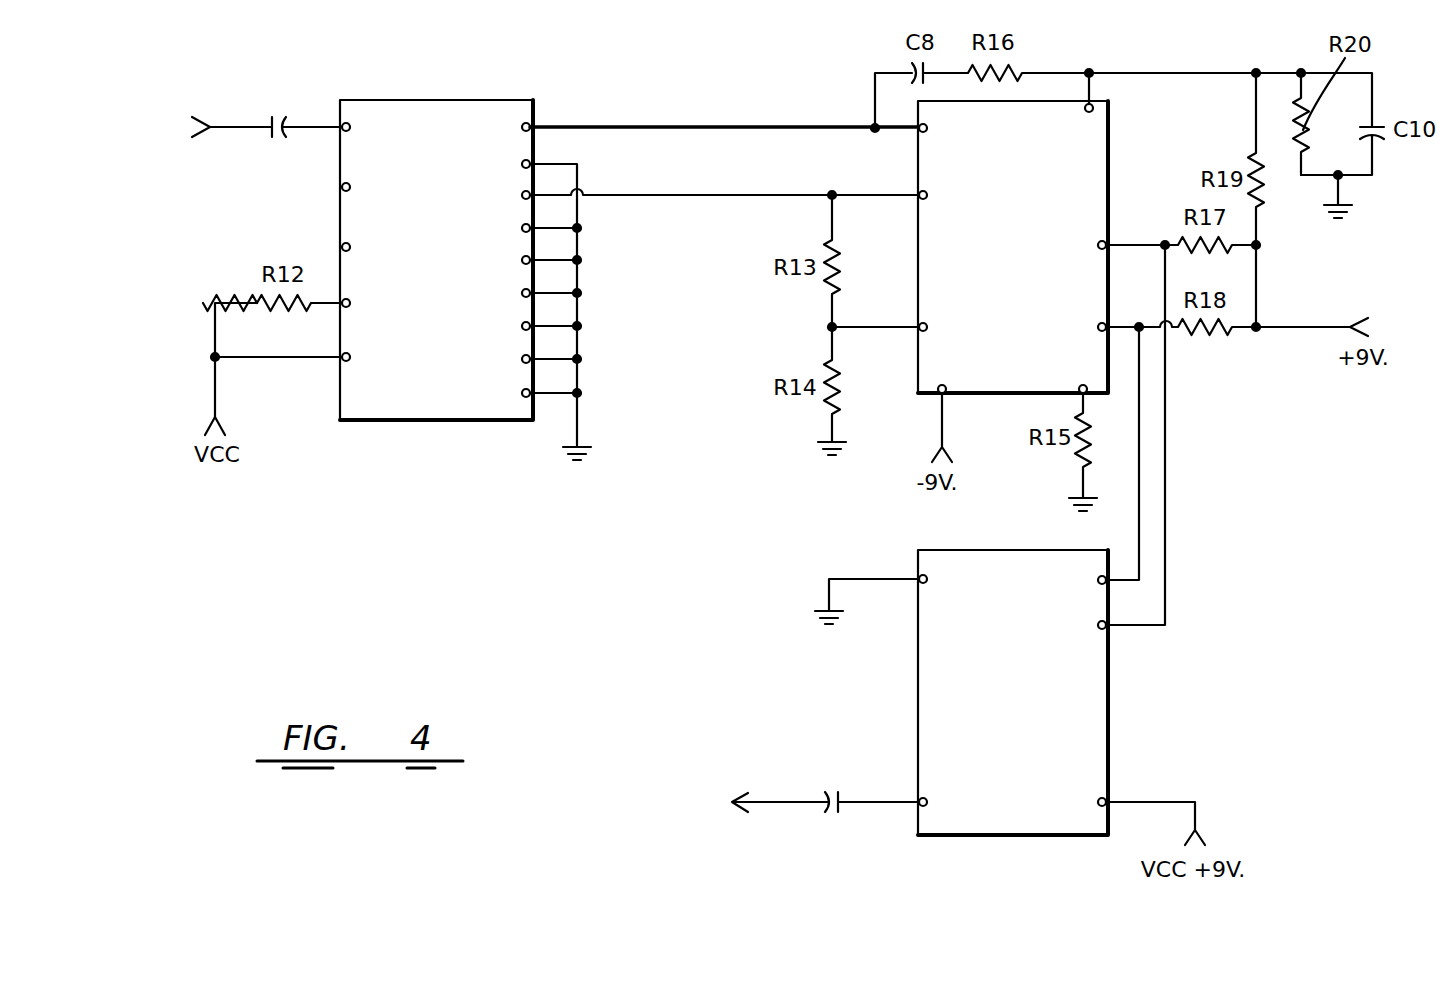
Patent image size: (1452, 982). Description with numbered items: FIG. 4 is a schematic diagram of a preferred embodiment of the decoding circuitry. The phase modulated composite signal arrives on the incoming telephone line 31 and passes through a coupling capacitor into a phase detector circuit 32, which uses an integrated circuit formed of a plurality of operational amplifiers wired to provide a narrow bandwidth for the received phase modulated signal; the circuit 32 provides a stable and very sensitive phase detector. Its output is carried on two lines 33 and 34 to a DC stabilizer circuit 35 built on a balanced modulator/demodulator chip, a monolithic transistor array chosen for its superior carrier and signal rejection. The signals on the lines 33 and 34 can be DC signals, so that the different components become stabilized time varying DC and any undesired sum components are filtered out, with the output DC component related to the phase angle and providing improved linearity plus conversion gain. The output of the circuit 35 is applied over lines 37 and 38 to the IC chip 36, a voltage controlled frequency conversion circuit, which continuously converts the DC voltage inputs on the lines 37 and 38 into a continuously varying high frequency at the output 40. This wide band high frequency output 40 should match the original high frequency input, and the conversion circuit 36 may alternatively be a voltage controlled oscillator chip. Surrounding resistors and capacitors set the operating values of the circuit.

The incoming telephone line 31 is at (258, 130).
The phase detector circuit 32 is at (422, 98).
The output line 33 is at (735, 127).
The output line 34 is at (735, 197).
The DC stabilizer circuit 35 is at (1110, 162).
The voltage controlled frequency conversion circuit 36 is at (917, 687).
The DC input line 37 is at (1143, 458).
The DC input line 38 is at (1167, 510).
The frequency output 40 is at (785, 800).